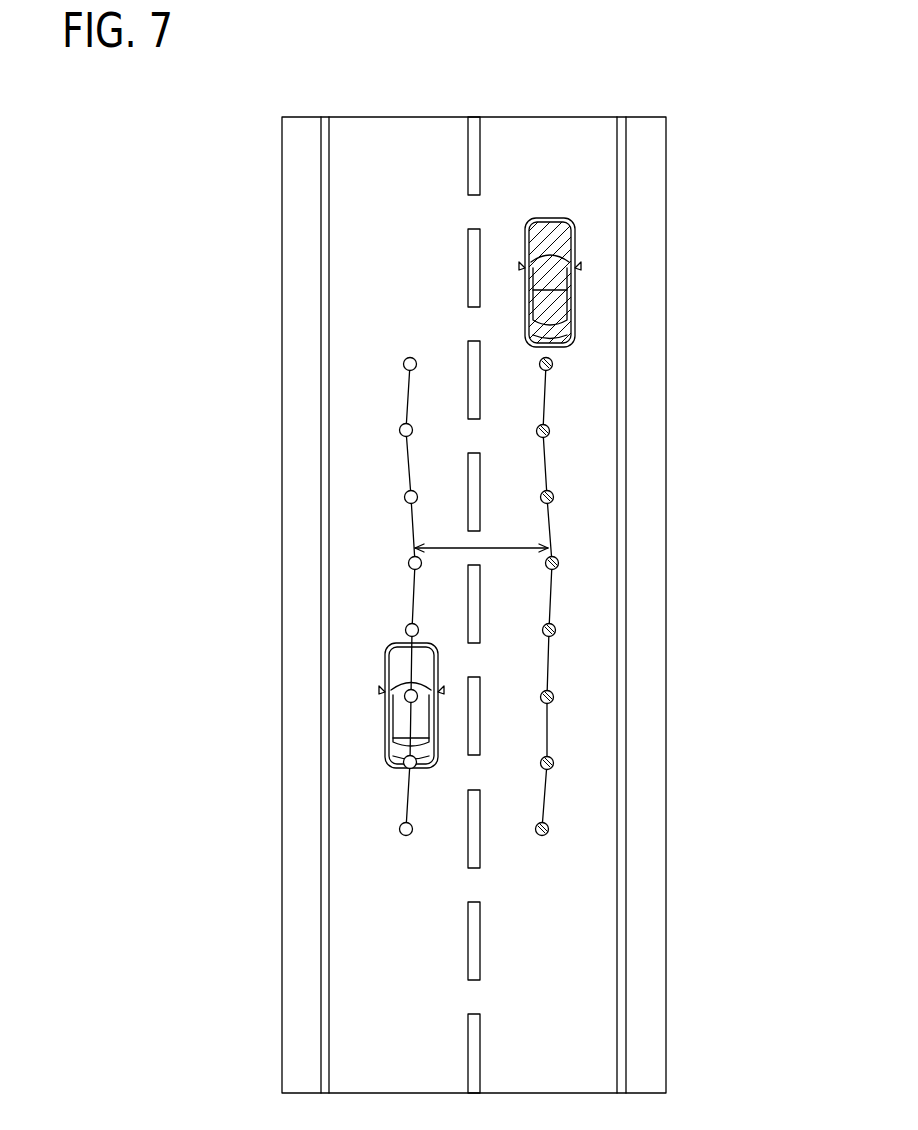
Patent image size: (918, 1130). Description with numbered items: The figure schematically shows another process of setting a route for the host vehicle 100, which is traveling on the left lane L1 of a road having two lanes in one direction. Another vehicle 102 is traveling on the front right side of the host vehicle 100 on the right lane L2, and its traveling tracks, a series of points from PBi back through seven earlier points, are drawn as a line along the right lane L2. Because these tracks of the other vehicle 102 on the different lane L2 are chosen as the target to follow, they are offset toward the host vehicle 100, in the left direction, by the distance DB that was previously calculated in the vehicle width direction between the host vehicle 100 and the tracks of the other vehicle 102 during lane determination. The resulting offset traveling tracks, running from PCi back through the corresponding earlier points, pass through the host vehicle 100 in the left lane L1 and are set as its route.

The left lane L1 is at (403, 137).
The right lane L2 is at (562, 137).
The host vehicle 100 is at (403, 720).
The other vehicle 102 is at (568, 292).
The offset traveling track PCi is at (403, 364).
The traveling track of the other vehicle PBi is at (553, 364).
The distance DB is at (481, 536).